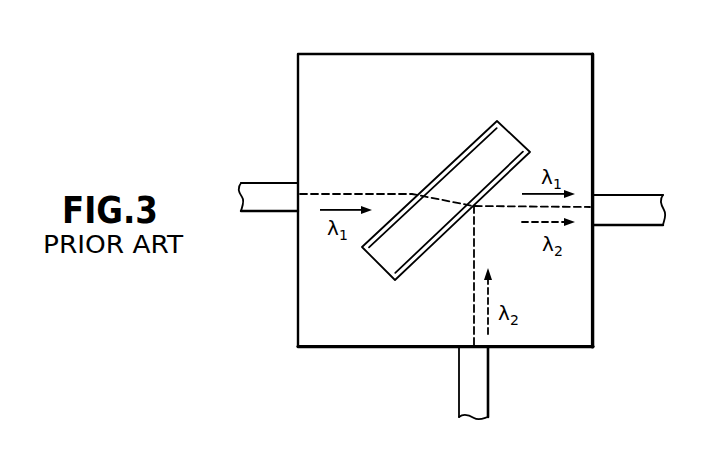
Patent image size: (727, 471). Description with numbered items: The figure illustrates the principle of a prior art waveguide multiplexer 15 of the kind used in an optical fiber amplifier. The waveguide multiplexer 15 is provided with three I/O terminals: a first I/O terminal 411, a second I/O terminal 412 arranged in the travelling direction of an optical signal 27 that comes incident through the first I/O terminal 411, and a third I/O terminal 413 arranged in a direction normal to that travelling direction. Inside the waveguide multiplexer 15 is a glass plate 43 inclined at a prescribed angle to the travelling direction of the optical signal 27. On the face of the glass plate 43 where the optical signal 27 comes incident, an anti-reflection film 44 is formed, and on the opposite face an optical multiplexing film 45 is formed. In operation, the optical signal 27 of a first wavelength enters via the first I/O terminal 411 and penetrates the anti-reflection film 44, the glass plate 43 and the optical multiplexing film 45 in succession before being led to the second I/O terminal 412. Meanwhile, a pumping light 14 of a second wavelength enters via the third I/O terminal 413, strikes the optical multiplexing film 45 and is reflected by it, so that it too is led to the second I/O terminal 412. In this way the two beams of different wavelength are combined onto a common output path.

The waveguide multiplexer 15 is at (300, 300).
The first I/O terminal 411 is at (285, 186).
The second I/O terminal 412 is at (627, 211).
The third I/O terminal 413 is at (477, 397).
The glass plate 43 is at (508, 147).
The anti-reflection film 44 is at (481, 120).
The optical multiplexing film 45 is at (522, 167).
The optical signal 27 is at (342, 191).
The pumping light 14 is at (470, 264).